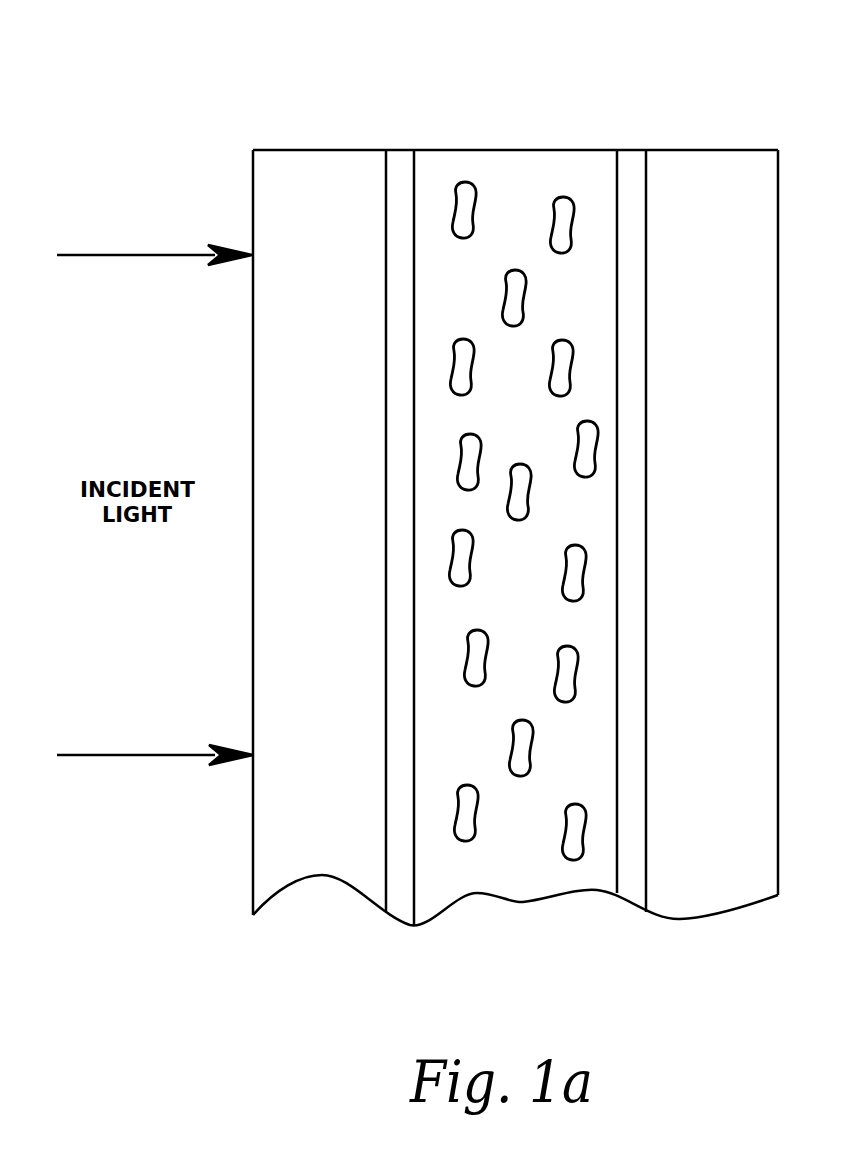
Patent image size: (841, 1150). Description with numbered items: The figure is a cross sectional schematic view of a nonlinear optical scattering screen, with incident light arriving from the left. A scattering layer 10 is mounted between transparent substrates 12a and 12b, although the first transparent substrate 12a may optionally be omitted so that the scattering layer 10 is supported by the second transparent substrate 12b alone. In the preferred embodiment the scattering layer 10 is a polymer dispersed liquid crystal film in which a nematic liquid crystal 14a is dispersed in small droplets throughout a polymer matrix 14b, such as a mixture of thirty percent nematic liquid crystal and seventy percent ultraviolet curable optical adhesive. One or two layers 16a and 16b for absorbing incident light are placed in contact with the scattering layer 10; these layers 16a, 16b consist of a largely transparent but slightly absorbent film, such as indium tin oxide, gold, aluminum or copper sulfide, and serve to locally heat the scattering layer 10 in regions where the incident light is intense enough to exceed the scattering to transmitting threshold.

The scattering layer 10 is at (522, 125).
The transparent substrate 12a is at (328, 148).
The transparent substrate 12b is at (708, 148).
The nematic liquid crystal 14a is at (557, 209).
The polymer matrix 14b is at (592, 305).
The layer for absorbing incident light 16a is at (400, 148).
The layer for absorbing incident light 16b is at (628, 148).